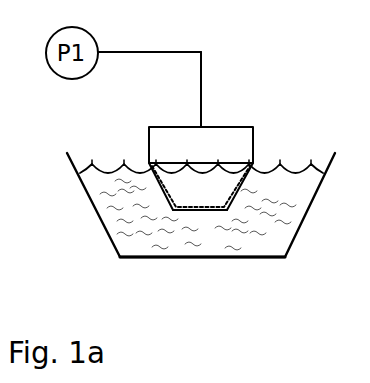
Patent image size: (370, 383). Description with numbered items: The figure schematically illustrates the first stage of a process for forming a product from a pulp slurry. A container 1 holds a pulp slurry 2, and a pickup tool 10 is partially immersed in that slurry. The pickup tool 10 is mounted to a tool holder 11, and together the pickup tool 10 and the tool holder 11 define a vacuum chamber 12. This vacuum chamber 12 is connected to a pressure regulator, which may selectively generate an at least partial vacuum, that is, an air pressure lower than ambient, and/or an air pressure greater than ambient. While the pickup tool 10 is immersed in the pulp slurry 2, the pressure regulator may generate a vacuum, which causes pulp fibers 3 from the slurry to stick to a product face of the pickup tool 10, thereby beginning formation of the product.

The container 1 is at (112, 244).
The pulp slurry 2 is at (135, 223).
The pulp fibers 3 is at (203, 213).
The pickup tool 10 is at (212, 207).
The tool holder 11 is at (235, 127).
The vacuum chamber 12 is at (212, 157).